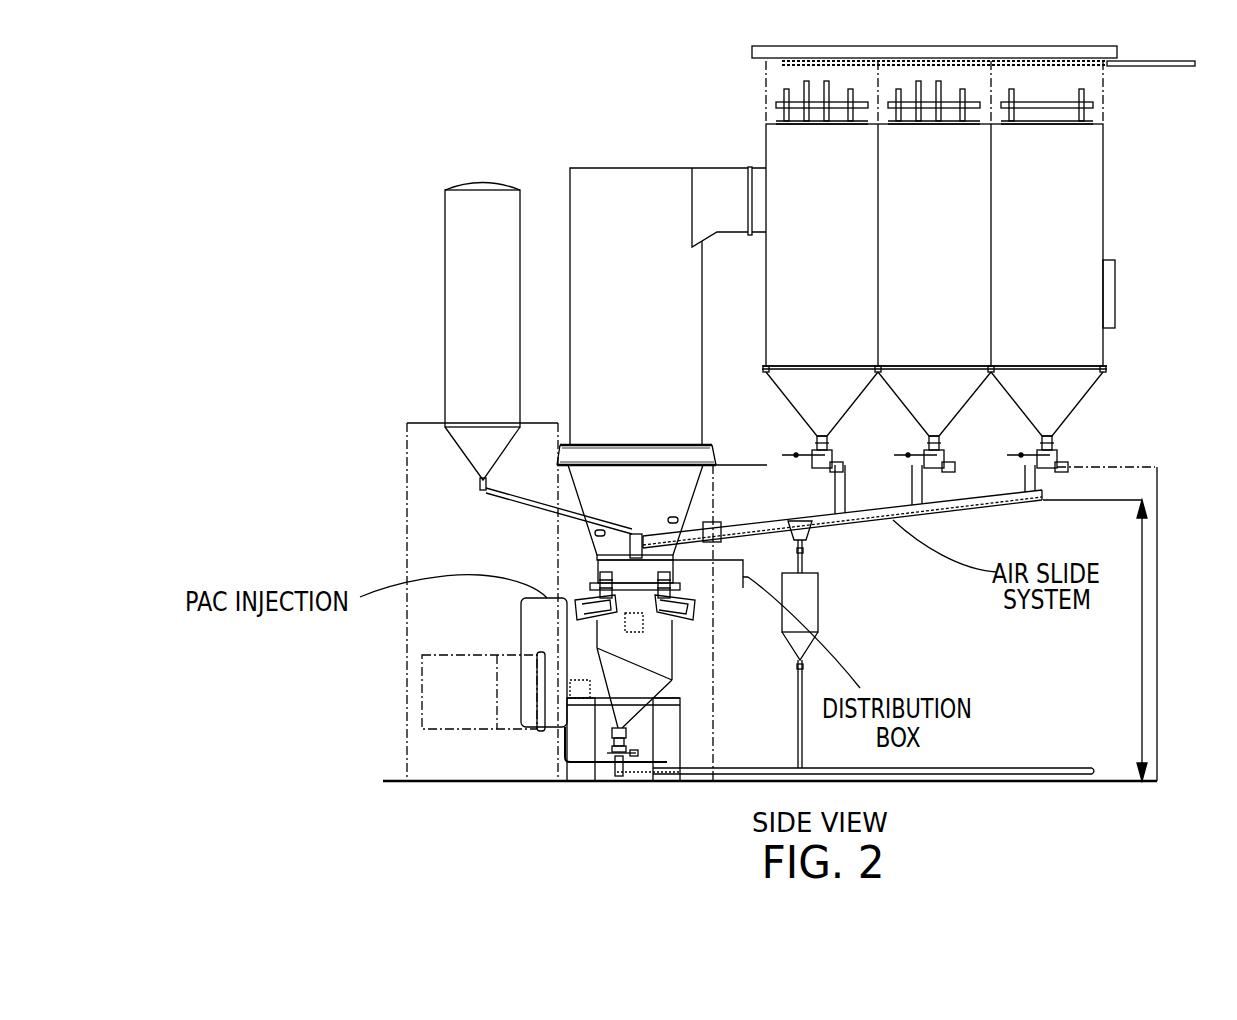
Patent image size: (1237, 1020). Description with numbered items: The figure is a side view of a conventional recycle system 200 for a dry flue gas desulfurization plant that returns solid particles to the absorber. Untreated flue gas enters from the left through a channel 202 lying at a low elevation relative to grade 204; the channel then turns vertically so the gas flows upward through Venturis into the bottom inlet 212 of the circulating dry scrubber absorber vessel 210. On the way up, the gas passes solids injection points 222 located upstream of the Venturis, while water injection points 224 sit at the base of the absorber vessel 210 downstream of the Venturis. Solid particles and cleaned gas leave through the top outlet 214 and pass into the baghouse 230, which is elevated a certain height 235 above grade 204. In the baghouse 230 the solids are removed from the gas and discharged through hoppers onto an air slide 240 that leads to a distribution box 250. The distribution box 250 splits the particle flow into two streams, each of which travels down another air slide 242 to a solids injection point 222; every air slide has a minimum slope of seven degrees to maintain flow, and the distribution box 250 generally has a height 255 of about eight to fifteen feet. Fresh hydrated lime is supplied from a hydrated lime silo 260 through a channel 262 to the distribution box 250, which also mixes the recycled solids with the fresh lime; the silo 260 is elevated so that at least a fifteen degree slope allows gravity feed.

The recycle system 200 is at (473, 125).
The channel 202 is at (465, 722).
The grade 204 is at (405, 775).
The circulating dry scrubber absorber vessel 210 is at (658, 364).
The bottom inlet 212 is at (652, 487).
The top outlet 214 is at (727, 182).
The solids injection points 222 is at (607, 627).
The water injection points 224 is at (595, 535).
The baghouse 230 is at (973, 259).
The height 235 is at (1157, 620).
The air slide 240 is at (937, 512).
The air slide 242 is at (683, 612).
The distribution box 250 is at (620, 578).
The height 255 is at (748, 577).
The hydrated lime silo 260 is at (485, 292).
The channel 262 is at (490, 504).